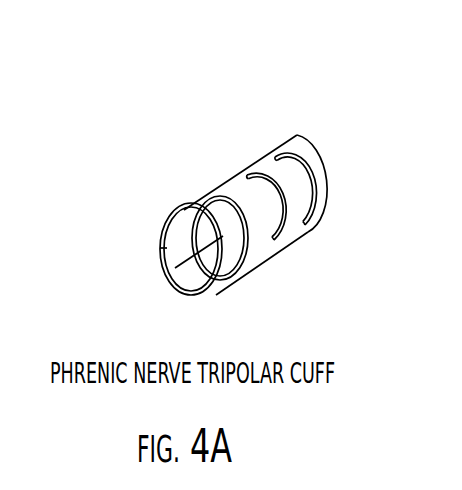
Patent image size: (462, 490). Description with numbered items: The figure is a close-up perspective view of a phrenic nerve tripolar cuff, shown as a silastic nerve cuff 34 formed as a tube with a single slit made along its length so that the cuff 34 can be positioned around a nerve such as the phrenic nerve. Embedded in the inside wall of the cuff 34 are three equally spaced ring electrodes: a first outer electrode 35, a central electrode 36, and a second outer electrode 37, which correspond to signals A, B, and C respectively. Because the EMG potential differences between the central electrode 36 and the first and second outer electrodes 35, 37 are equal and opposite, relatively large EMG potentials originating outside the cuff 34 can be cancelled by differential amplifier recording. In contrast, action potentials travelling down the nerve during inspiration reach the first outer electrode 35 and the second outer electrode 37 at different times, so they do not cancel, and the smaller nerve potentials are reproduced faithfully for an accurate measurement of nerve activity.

The nerve cuff 34 is at (275, 73).
The first outer electrode 35 is at (247, 236).
The central electrode 36 is at (286, 203).
The second outer electrode 37 is at (309, 170).